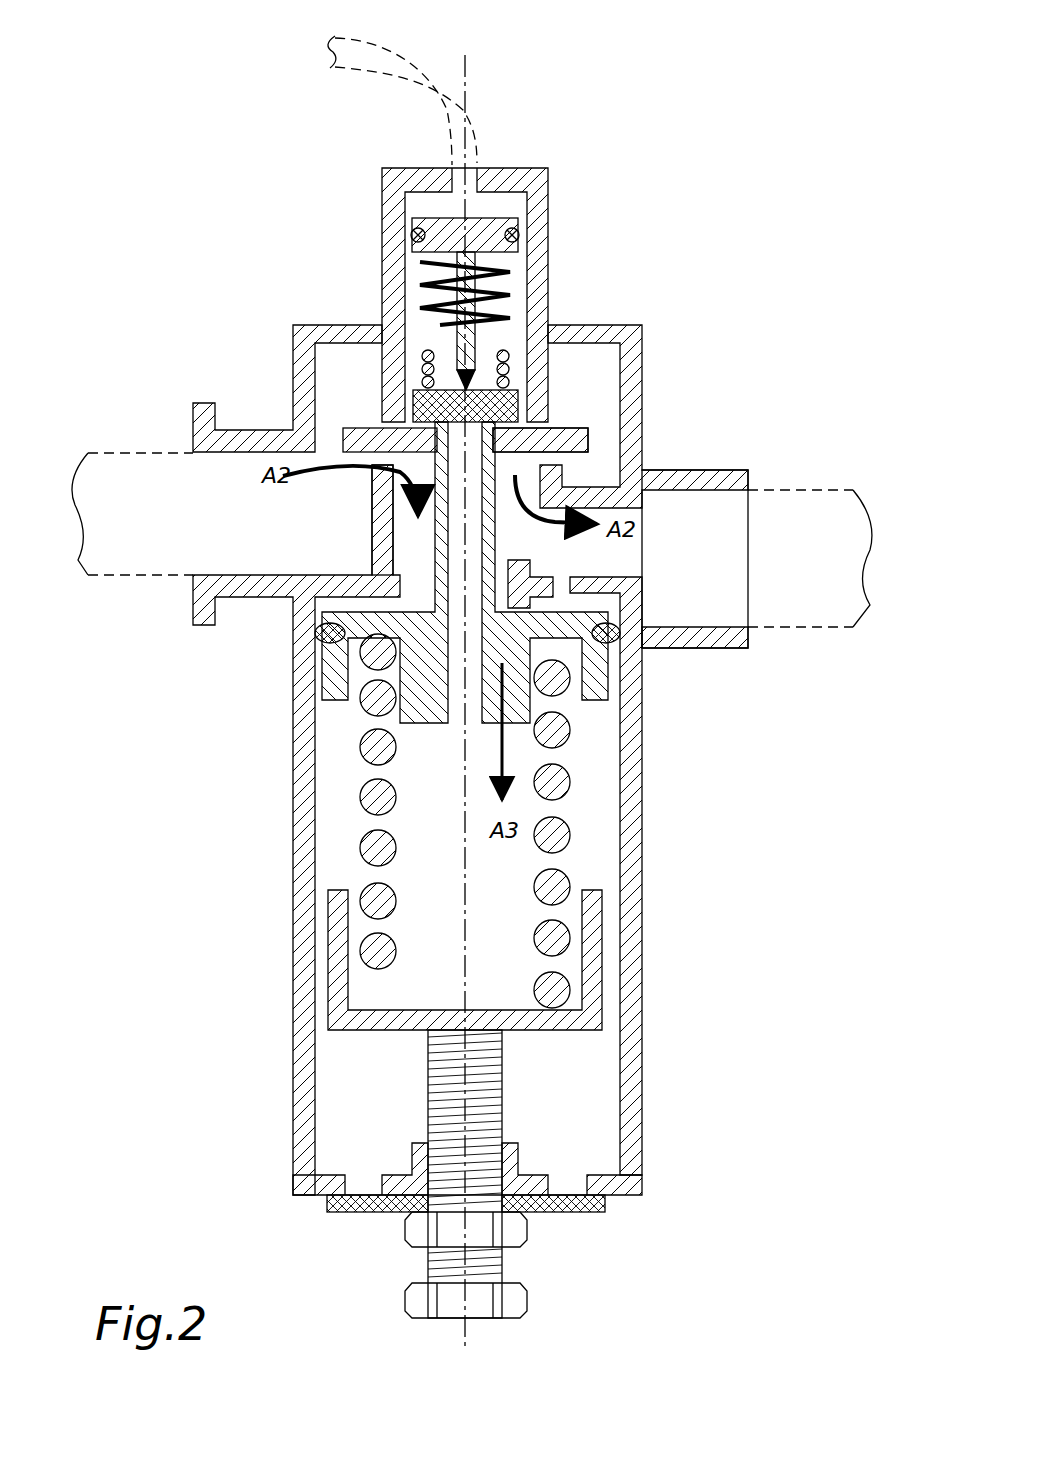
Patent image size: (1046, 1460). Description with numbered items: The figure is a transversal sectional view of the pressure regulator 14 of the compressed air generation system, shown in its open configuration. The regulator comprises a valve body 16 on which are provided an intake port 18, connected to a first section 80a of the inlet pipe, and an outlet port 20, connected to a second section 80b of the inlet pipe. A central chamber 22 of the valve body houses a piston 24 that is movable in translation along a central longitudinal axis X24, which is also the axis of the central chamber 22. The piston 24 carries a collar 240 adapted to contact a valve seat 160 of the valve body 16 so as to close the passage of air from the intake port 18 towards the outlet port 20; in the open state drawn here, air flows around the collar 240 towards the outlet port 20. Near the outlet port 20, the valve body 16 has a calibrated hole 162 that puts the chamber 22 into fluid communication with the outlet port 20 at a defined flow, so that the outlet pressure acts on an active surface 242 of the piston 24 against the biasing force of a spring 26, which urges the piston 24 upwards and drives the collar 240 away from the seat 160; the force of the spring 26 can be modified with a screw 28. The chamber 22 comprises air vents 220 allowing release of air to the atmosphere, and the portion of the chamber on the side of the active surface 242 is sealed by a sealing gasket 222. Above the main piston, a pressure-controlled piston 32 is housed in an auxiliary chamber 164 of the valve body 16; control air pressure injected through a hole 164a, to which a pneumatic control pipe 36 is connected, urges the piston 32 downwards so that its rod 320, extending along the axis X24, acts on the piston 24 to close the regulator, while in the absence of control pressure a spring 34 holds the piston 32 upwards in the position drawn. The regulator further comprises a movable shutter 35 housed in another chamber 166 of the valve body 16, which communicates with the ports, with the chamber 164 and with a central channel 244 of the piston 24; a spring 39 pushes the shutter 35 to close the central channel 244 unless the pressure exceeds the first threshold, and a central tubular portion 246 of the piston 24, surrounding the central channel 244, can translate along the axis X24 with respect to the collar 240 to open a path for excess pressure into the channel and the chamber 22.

The pressure regulator 14 is at (608, 162).
The valve body 16 is at (625, 327).
The intake port 18 is at (205, 487).
The outlet port 20 is at (740, 537).
The central chamber 22 is at (641, 628).
The piston 24 is at (596, 692).
The spring 26 is at (558, 836).
The screw 28 is at (500, 1088).
The pressure-controlled piston 32 is at (435, 233).
The spring 34 is at (433, 268).
The movable shutter 35 is at (520, 410).
The pneumatic control pipe 36 is at (388, 58).
The spring 39 is at (420, 368).
The first section of the inlet pipe 80a is at (123, 453).
The second section of the inlet pipe 80b is at (828, 490).
The valve seat 160 is at (470, 533).
The calibrated hole 162 is at (565, 578).
The auxiliary chamber 164 is at (530, 282).
The hole 164a is at (472, 165).
The chamber 166 is at (527, 372).
The air vents 220 is at (377, 1200).
The sealing gasket 222 is at (316, 636).
The collar 240 is at (578, 443).
The active surface 242 is at (622, 612).
The central channel 244 is at (453, 706).
The central tubular portion 246 is at (595, 457).
The rod 320 is at (418, 280).
The central longitudinal axis X24 is at (471, 688).